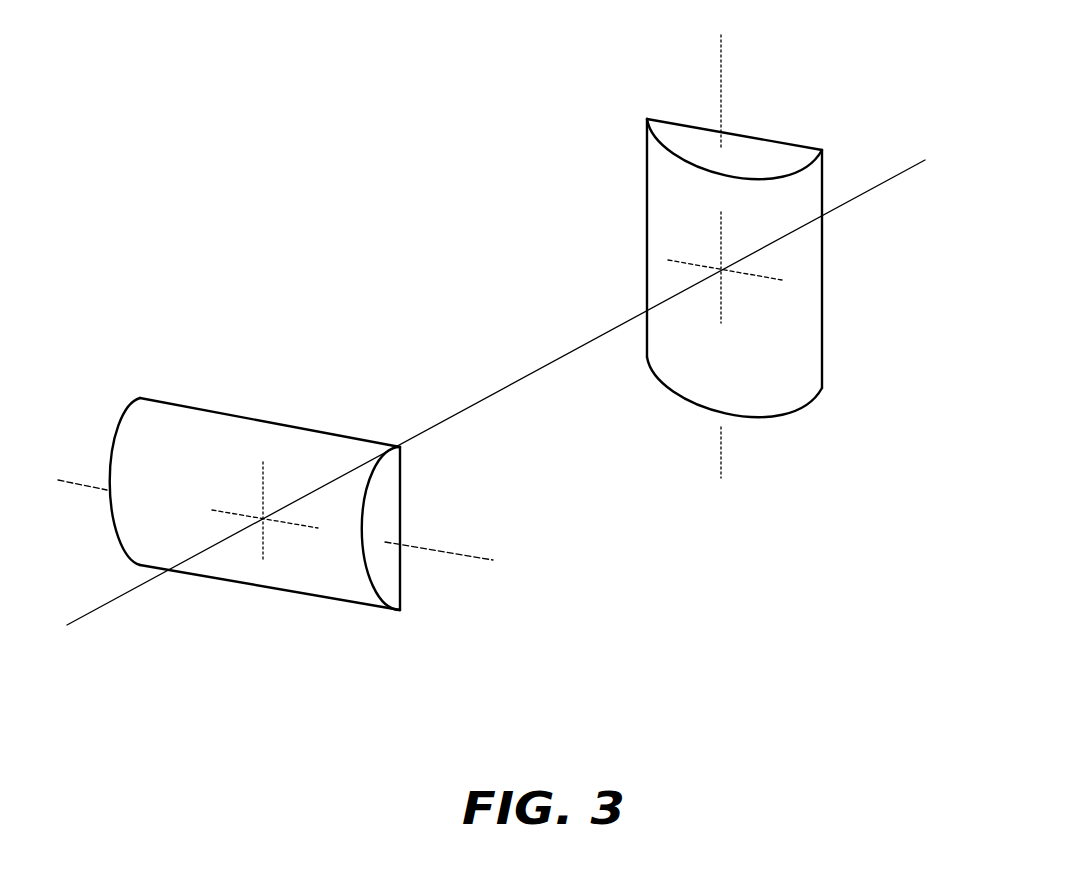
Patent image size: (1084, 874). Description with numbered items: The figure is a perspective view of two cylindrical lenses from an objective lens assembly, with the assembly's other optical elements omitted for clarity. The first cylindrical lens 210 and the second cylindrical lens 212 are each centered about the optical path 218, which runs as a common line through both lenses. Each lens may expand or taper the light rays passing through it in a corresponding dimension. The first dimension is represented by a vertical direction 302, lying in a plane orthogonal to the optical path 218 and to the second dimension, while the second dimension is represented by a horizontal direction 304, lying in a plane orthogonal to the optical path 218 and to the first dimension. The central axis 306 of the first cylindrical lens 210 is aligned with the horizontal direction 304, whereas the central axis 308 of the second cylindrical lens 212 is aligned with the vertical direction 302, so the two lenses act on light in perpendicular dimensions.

The first cylindrical lens 210 is at (252, 417).
The second cylindrical lens 212 is at (762, 138).
The optical path 218 is at (537, 368).
The vertical direction 302 is at (263, 482).
The horizontal direction 304 is at (295, 527).
The central axis of the first cylindrical lens 306 is at (455, 552).
The central axis of the second cylindrical lens 308 is at (721, 463).